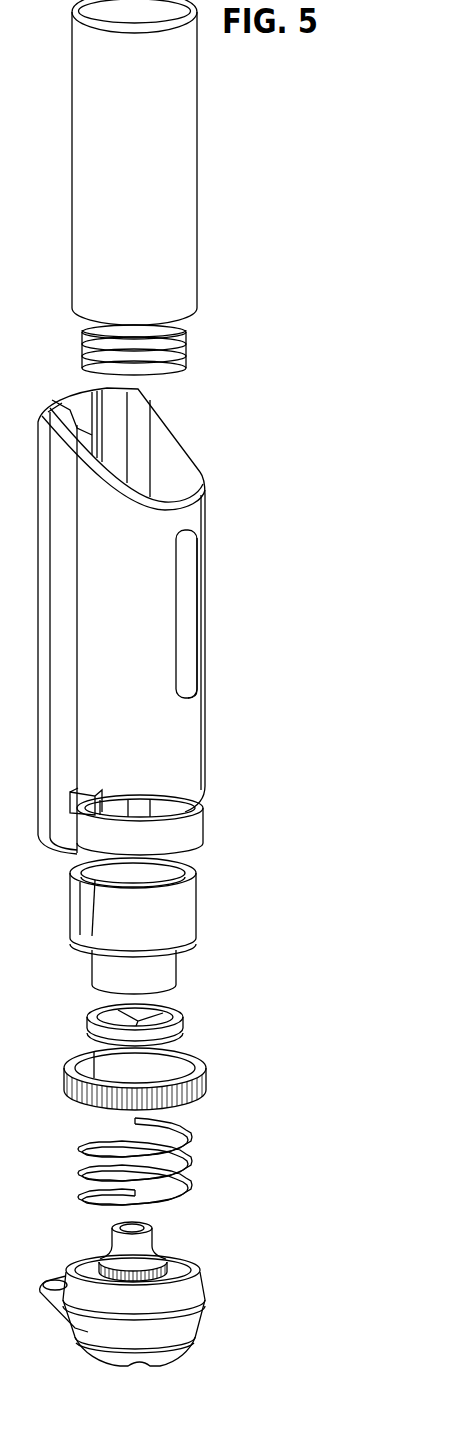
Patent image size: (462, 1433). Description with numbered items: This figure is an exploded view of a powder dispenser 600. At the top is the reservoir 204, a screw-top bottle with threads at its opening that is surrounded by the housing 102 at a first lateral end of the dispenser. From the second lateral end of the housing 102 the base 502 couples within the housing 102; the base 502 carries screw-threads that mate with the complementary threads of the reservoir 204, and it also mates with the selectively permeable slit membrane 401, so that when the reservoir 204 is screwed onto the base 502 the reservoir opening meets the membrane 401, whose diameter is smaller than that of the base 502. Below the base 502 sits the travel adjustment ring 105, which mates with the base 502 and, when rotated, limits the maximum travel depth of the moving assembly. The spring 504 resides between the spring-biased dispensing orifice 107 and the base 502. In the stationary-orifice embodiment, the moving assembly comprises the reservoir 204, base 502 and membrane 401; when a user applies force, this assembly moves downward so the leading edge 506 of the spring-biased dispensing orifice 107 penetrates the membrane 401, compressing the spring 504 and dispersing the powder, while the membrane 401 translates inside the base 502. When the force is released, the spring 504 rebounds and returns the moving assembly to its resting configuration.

The reservoir 204 is at (151, 148).
The vaporizer assembly 600 is at (453, 202).
The housing 102 is at (187, 728).
The base 502 is at (183, 922).
The selectively permeable slit membrane 401 is at (187, 1014).
The travel adjustment ring 105 is at (208, 1074).
The spring 504 is at (170, 1156).
The leading edge 506 is at (153, 1238).
The spring-biased dispensing orifice 107 is at (200, 1333).